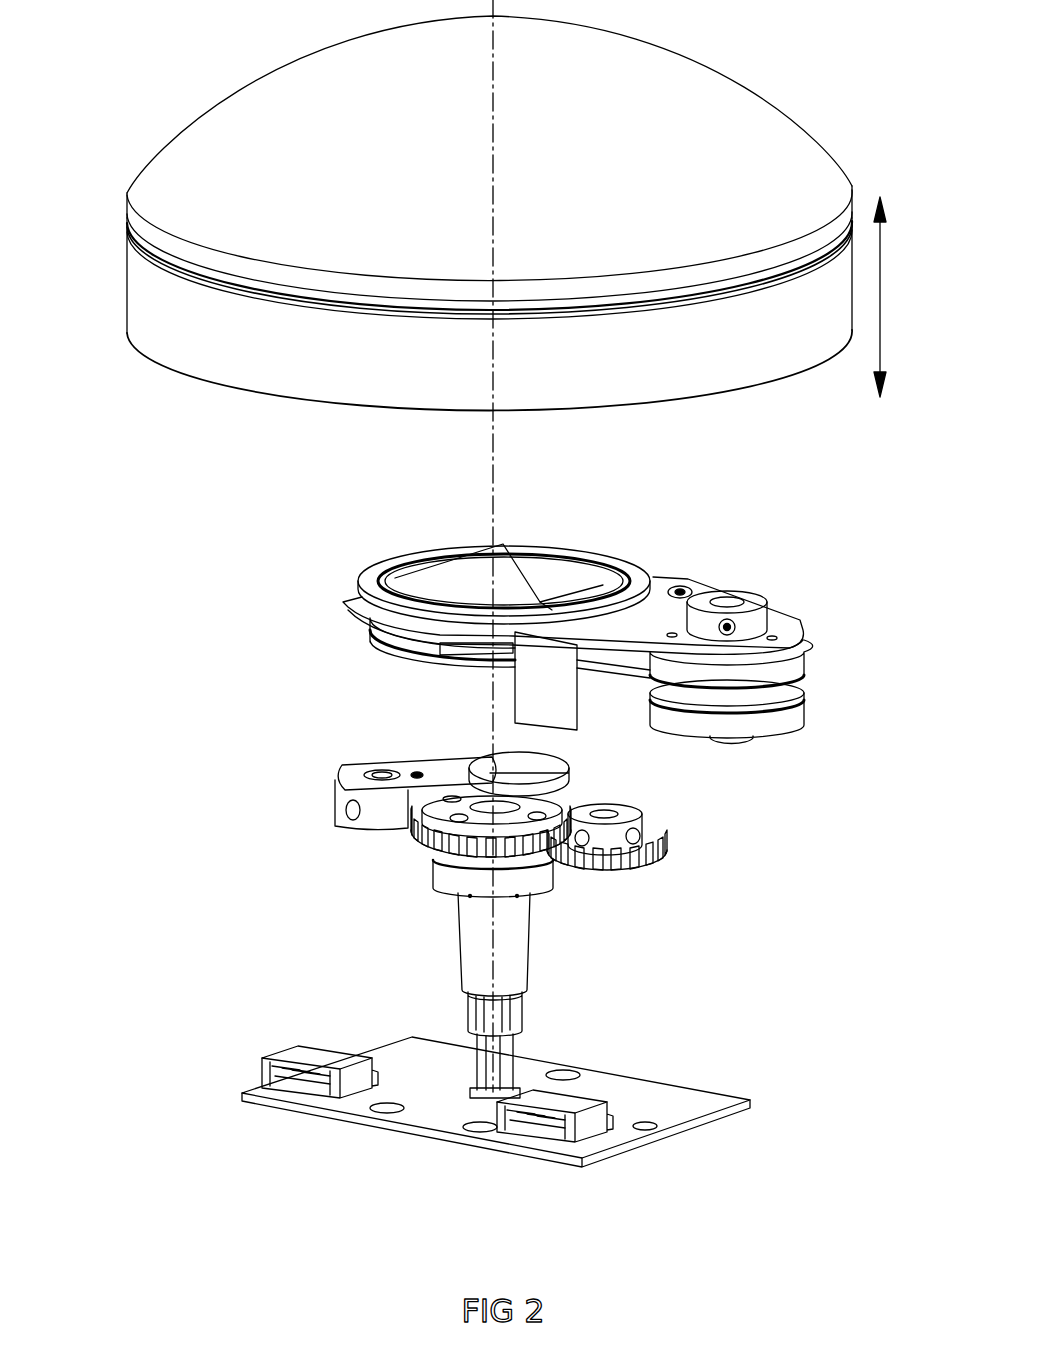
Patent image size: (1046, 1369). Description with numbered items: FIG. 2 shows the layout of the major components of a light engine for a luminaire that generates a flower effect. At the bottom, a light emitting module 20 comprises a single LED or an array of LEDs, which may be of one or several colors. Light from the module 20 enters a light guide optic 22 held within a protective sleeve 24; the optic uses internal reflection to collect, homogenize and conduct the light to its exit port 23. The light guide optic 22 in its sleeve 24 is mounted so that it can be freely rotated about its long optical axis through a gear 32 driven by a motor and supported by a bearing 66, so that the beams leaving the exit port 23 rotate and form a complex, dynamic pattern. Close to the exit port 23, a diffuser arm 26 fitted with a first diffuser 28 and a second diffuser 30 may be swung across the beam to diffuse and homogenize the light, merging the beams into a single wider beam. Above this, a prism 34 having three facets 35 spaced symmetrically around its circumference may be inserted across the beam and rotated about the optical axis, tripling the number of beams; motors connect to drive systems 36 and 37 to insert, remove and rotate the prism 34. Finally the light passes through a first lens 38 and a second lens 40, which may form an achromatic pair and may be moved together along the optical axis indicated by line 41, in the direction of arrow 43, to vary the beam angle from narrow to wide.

The light emitting module 20 is at (470, 1098).
The light guide optic 22 is at (507, 1063).
The exit port 23 is at (473, 815).
The protective sleeve 24 is at (508, 973).
The diffuser arm 26 is at (347, 775).
The first diffuser 28 is at (493, 760).
The second diffuser 30 is at (575, 772).
The gear 32 is at (672, 856).
The prism 34 is at (557, 570).
The facets 35 is at (450, 577).
The drive system 36 is at (788, 672).
The drive system 37 is at (792, 727).
The first lens 38 is at (143, 322).
The second lens 40 is at (150, 185).
The line 41 is at (493, 470).
The arrow 43 is at (896, 297).
The bearing 66 is at (437, 887).